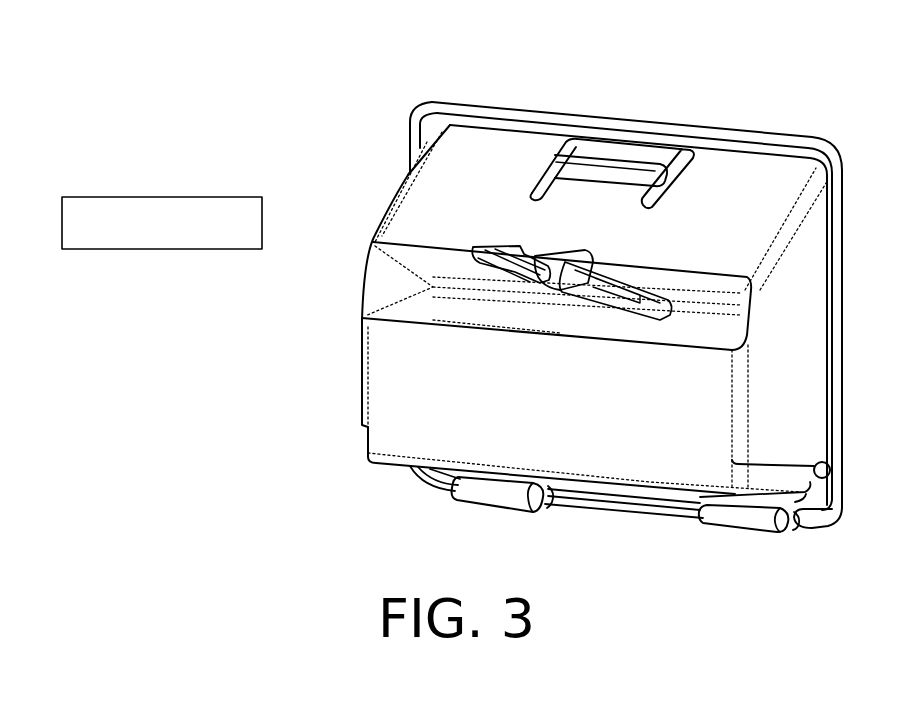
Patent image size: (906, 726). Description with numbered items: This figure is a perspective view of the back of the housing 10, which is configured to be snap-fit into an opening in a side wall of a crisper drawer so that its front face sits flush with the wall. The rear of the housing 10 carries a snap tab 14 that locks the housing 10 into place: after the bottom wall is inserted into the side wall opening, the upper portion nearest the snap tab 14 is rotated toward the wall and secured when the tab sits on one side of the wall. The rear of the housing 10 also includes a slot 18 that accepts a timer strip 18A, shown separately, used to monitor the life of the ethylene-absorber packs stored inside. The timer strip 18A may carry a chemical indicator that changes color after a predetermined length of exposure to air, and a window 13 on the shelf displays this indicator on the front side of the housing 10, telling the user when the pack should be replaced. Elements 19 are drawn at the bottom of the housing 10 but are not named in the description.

The housing 10 is at (352, 83).
The window 13 is at (563, 303).
The snap tab 14 is at (616, 162).
The slot 18 is at (507, 286).
The timer strip 18A is at (127, 249).
The rollers 19 is at (487, 497).